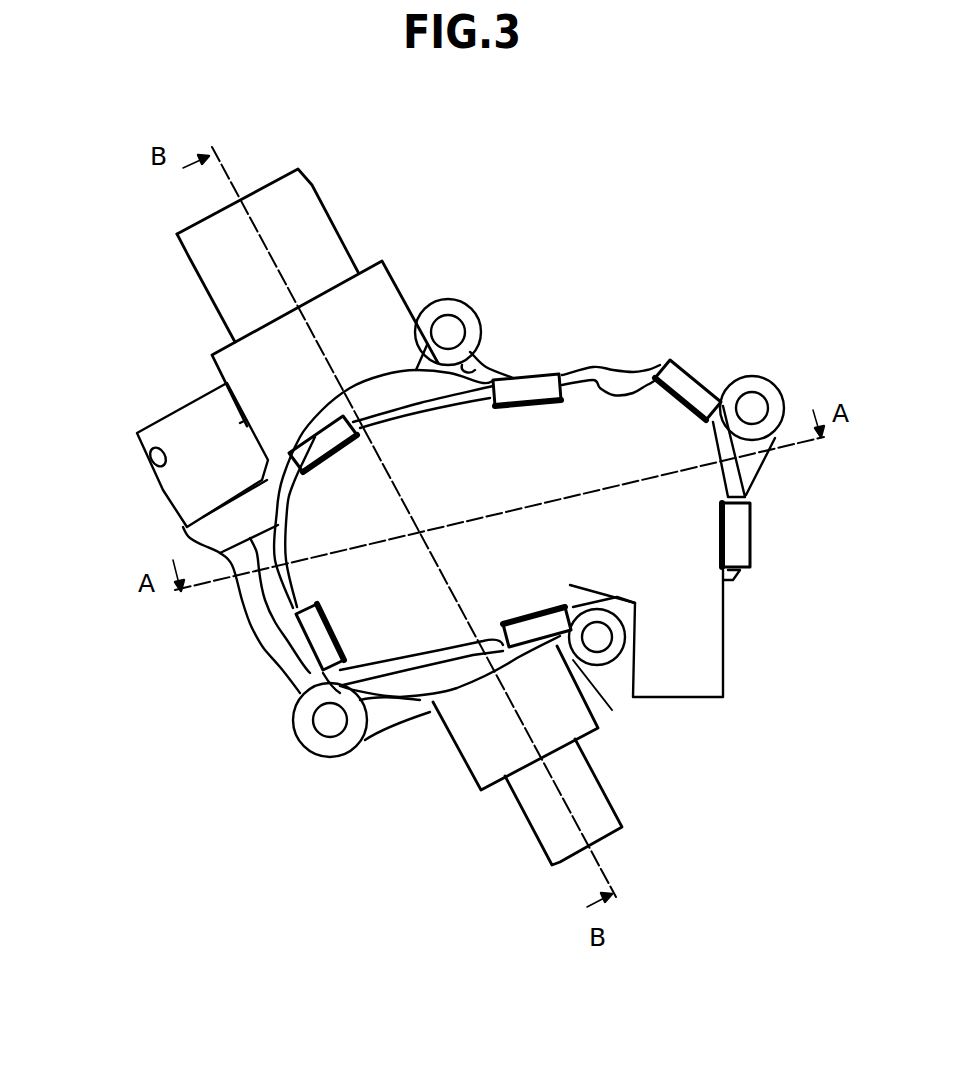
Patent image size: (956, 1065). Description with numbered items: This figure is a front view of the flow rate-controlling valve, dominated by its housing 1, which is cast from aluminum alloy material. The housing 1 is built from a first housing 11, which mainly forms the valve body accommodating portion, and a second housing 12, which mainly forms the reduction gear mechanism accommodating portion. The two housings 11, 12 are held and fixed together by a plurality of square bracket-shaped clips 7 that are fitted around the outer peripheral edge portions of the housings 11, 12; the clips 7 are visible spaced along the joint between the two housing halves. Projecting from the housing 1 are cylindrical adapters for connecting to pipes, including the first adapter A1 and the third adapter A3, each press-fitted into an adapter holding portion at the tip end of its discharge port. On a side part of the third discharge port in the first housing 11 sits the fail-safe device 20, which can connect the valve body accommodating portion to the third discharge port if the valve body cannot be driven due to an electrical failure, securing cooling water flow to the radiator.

The housing 1 is at (426, 534).
The clip 7 is at (312, 452).
The first housing 11 is at (280, 590).
The second housing 12 is at (264, 609).
The fail-safe device 20 is at (158, 490).
The first adapter A1 is at (505, 784).
The third adapter A3 is at (196, 303).